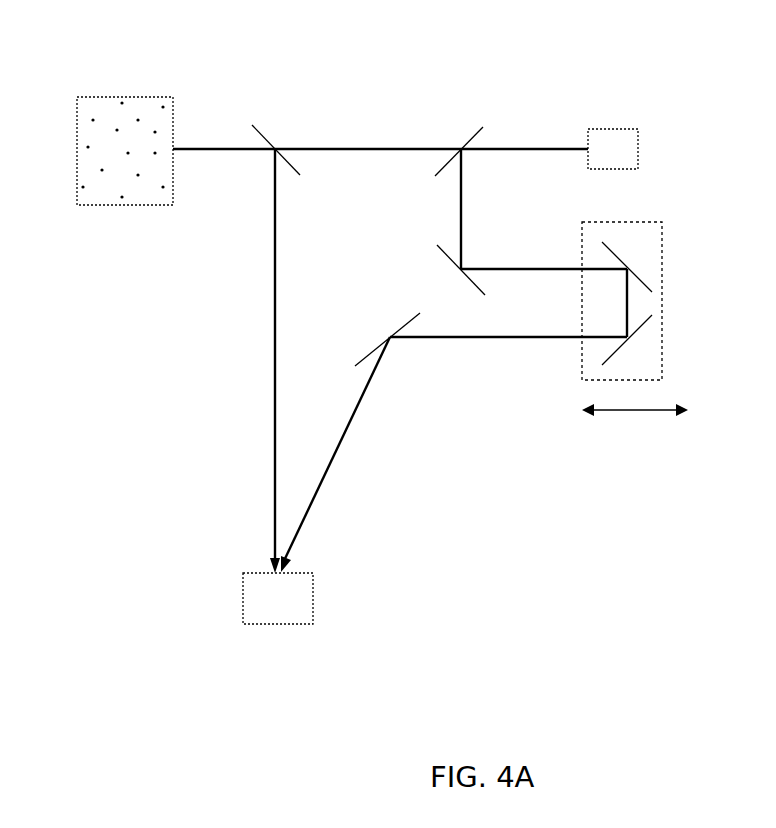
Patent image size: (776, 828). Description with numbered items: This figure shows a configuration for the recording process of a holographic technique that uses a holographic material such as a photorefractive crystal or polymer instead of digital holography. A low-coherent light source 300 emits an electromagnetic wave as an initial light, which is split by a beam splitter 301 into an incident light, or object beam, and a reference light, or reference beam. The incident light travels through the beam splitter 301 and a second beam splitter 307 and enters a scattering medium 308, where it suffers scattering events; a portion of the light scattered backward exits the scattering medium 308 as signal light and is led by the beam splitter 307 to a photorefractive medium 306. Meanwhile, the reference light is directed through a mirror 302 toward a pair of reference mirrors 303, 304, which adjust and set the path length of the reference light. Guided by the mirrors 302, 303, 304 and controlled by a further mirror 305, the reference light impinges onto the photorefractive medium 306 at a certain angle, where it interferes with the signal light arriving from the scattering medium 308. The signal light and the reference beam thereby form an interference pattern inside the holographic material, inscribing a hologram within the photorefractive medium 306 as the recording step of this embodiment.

The low-coherent light source 300 is at (610, 145).
The beam splitter 301 is at (468, 130).
The mirror 302 is at (447, 257).
The reference mirror 303 is at (642, 280).
The reference mirror 304 is at (640, 327).
The mirror 305 is at (365, 357).
The photorefractive medium 306 is at (305, 600).
The beam splitter 307 is at (258, 130).
The scattering medium 308 is at (145, 194).